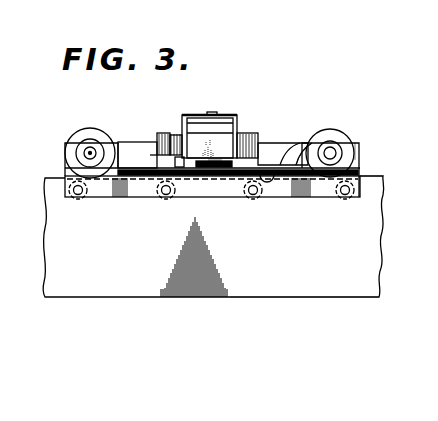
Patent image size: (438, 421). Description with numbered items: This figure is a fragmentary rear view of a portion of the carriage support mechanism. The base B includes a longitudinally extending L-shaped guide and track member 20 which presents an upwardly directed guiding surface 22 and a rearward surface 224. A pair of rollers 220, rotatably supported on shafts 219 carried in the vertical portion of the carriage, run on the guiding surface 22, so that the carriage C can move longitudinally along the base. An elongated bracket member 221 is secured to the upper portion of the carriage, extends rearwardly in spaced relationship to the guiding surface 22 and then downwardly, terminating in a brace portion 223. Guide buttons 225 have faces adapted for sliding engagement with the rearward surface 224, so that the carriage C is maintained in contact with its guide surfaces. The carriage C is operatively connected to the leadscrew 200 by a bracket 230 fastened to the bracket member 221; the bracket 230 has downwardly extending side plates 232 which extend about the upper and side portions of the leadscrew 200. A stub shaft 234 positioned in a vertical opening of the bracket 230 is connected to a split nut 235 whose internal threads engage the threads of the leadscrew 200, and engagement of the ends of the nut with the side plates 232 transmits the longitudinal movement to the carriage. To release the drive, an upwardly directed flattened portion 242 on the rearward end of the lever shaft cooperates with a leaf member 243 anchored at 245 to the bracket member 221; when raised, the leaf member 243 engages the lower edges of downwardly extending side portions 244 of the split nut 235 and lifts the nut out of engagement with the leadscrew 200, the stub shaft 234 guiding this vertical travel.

The guide and track member 20 is at (372, 228).
The upwardly directed guiding surface 22 is at (363, 177).
The leadscrew 200 is at (170, 135).
The shafts 219 is at (90, 153).
The rollers 220 is at (82, 133).
The bracket member 221 is at (132, 131).
The brace portion 223 is at (177, 193).
The rearward surface 224 is at (274, 260).
The guide buttons 225 is at (82, 200).
The bracket 230 is at (228, 113).
The side plates 232 is at (243, 132).
The stub shaft 234 is at (212, 112).
The split nut 235 is at (216, 163).
The flattened portion 242 is at (273, 148).
The leaf member 243 is at (293, 146).
The side portions 244 is at (203, 163).
The anchor point 245 is at (360, 148).
The base B is at (334, 303).
The carriage C is at (66, 139).